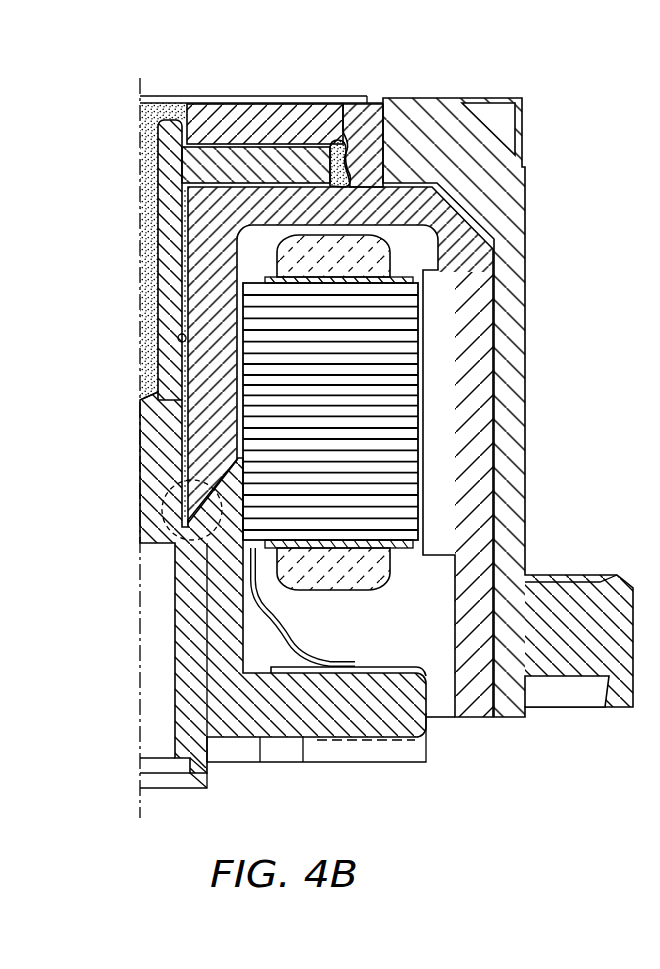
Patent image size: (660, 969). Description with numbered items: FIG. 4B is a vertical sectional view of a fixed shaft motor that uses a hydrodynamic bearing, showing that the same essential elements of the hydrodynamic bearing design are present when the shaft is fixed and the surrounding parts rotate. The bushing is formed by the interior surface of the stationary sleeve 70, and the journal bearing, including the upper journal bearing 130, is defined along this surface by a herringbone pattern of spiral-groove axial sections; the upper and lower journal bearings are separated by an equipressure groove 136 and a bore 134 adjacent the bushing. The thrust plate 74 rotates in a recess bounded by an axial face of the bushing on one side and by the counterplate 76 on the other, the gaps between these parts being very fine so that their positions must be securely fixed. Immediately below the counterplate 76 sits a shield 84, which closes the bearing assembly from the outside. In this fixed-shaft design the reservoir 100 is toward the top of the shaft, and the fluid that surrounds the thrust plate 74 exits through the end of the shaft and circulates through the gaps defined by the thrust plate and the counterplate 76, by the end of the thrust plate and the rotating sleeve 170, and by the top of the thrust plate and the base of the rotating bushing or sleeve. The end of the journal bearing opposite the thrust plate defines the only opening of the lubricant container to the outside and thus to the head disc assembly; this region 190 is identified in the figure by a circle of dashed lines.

The sleeve 70 is at (327, 373).
The thrust plate 74 is at (265, 92).
The counterplate 76 is at (256, 119).
The shield 84 is at (261, 77).
The reservoir 100 is at (182, 209).
The upper journal bearing 130 is at (229, 590).
The bore 134 is at (103, 260).
The equipressure groove 136 is at (204, 355).
The rotating sleeve 170 is at (499, 385).
The region 190 is at (280, 612).